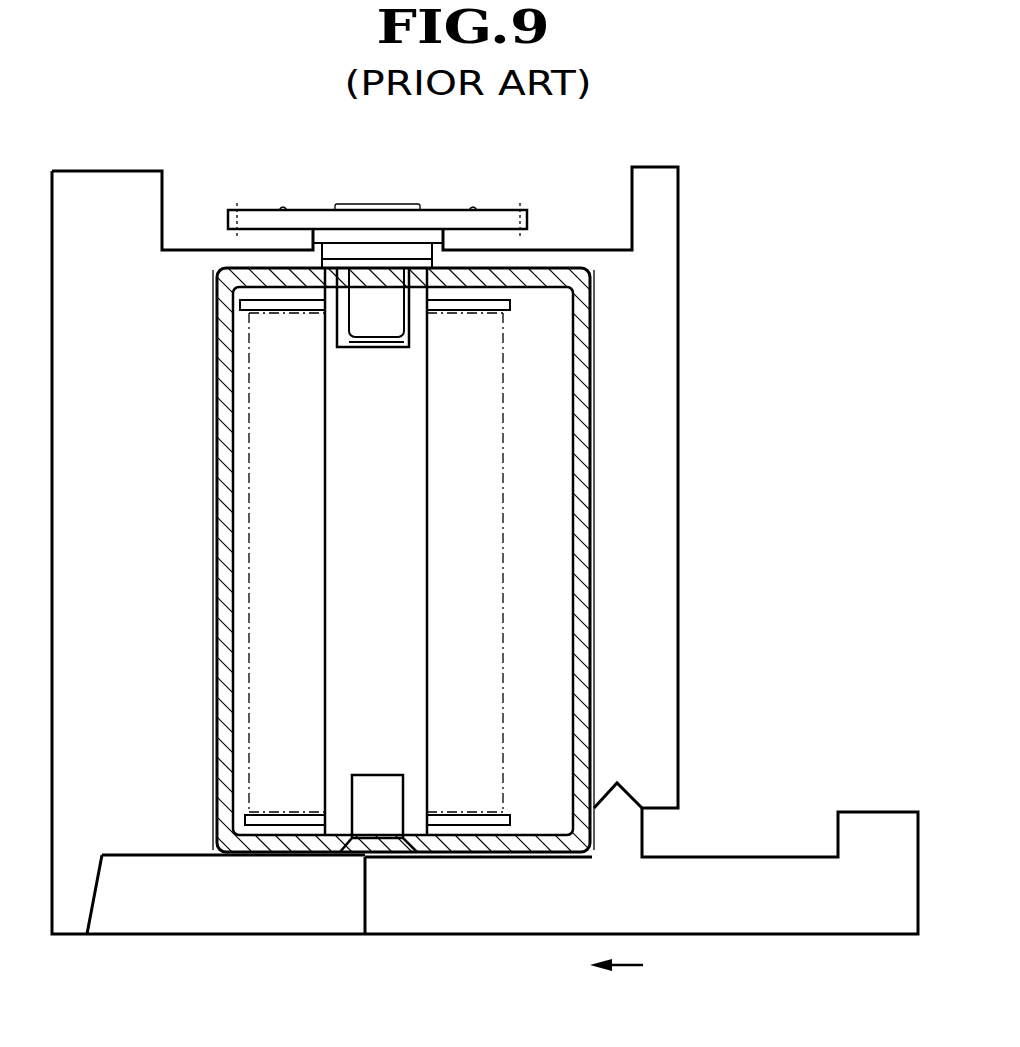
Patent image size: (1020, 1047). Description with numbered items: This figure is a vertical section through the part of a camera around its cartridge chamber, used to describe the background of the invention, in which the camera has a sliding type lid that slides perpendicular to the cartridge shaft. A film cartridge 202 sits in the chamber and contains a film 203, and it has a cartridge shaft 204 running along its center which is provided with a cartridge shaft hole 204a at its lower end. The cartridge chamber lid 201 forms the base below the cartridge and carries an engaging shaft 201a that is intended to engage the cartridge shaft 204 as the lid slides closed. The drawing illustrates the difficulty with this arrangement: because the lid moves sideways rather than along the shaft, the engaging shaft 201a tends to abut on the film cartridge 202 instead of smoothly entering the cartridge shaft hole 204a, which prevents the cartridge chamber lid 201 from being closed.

The cartridge chamber lid 201 is at (792, 905).
The engaging shaft 201a is at (620, 828).
The film cartridge 202 is at (580, 400).
The film 203 is at (465, 472).
The cartridge shaft 204 is at (393, 582).
The cartridge shaft hole 204a is at (382, 820).